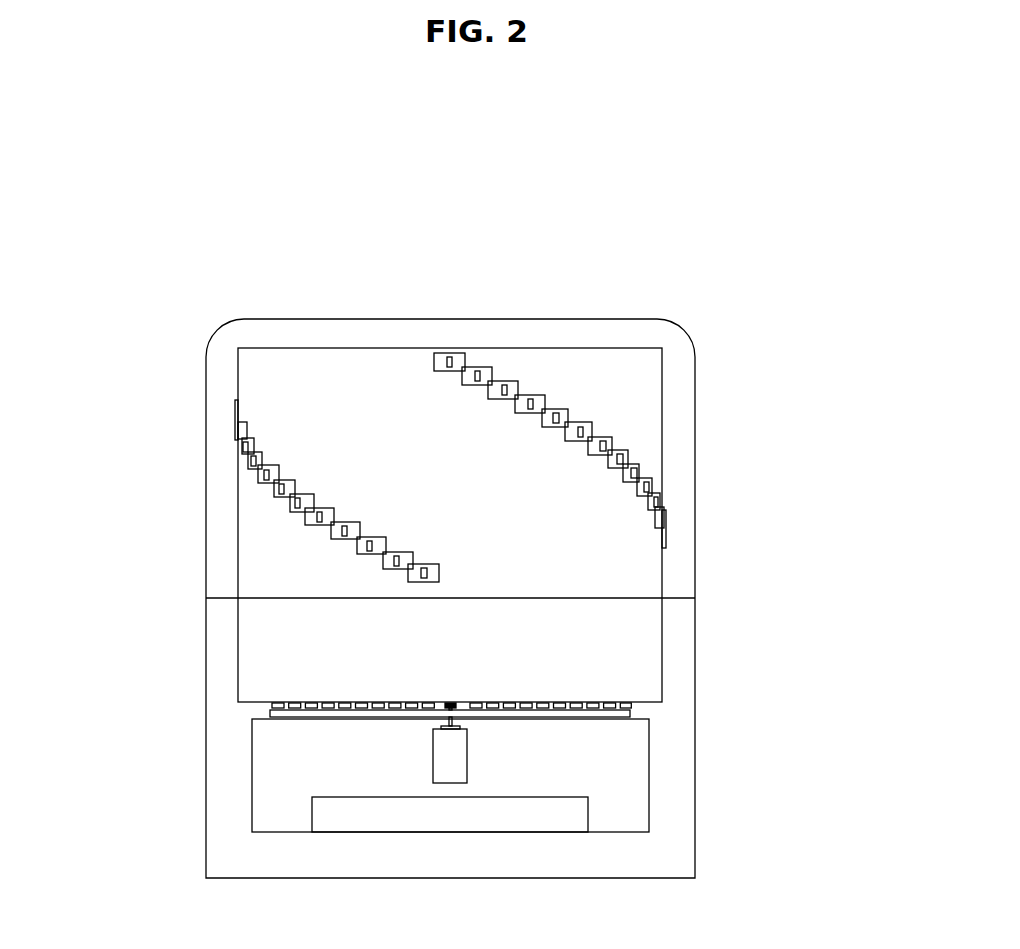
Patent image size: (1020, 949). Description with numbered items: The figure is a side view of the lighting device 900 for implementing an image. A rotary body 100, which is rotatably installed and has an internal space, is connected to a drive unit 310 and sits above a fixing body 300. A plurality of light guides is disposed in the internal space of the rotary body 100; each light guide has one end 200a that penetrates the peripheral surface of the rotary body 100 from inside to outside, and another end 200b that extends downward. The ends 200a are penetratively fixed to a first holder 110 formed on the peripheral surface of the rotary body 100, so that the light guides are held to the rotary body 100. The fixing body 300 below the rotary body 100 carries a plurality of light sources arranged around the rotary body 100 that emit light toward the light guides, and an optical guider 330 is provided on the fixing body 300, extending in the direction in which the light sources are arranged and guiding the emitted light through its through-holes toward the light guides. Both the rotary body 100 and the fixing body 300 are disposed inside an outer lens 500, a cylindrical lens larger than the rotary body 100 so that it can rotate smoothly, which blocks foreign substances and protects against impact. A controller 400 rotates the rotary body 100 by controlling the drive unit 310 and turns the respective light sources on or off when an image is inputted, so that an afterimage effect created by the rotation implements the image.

The lighting device 900 is at (280, 223).
The outer lens 500 is at (196, 488).
The rotary body 100 is at (674, 467).
The first holder 110 is at (592, 428).
The one end 200a is at (503, 385).
The other end 200b is at (542, 700).
The optical guider 330 is at (630, 716).
The fixing body 300 is at (247, 768).
The drive unit 310 is at (447, 772).
The controller 400 is at (542, 817).